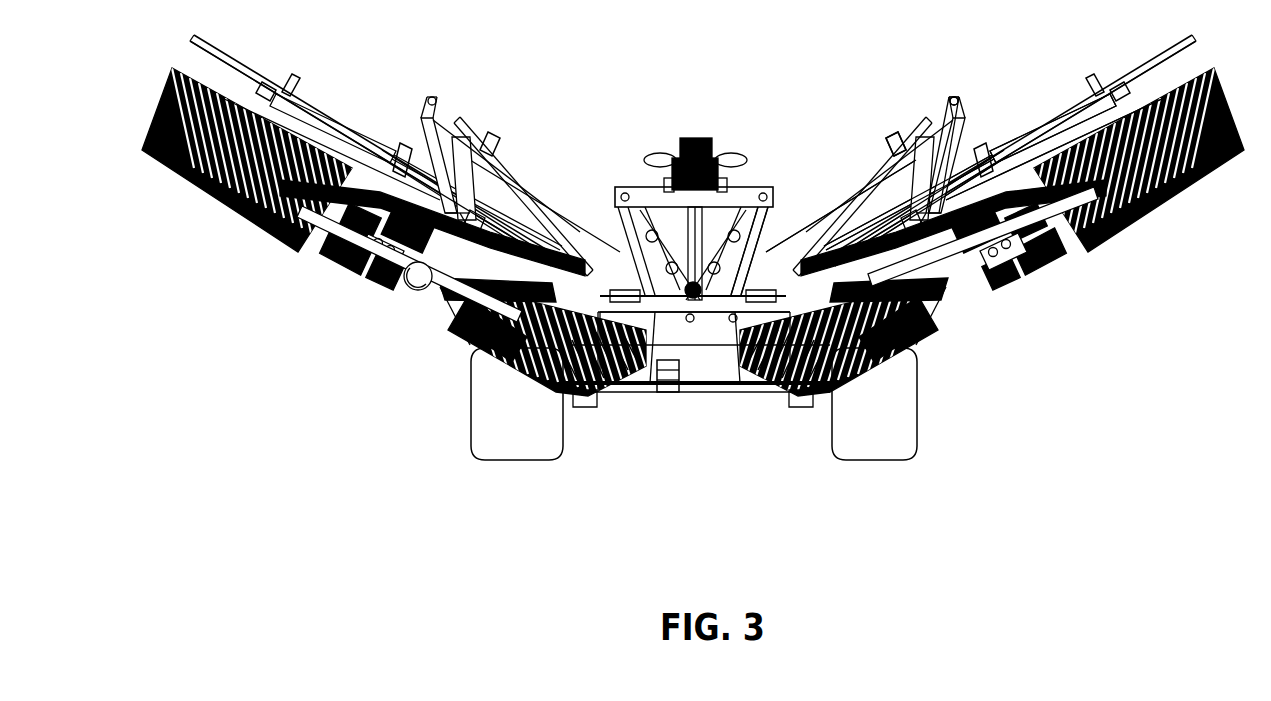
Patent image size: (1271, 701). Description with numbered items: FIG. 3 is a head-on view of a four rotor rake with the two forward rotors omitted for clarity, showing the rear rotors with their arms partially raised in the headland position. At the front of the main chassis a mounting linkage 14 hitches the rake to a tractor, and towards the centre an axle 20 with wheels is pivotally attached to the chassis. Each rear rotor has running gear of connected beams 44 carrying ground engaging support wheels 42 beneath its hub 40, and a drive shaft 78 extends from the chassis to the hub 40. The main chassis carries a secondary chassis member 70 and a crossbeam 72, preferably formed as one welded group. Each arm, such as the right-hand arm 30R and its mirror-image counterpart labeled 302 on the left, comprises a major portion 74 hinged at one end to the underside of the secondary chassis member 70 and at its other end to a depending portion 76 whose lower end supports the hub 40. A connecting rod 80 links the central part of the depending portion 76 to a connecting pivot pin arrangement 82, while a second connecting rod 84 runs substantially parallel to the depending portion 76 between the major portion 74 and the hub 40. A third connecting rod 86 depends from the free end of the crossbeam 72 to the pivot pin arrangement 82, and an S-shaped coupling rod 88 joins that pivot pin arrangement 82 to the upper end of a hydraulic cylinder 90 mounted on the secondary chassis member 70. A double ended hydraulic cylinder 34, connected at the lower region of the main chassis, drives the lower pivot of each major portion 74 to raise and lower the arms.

The mounting linkage 14 is at (658, 340).
The axle 20 is at (596, 449).
The arm 30R is at (1016, 188).
The left brush assembly 302 is at (338, 201).
The double ended hydraulic cylinder 34 is at (670, 303).
The hub 40 is at (993, 150).
The support wheels 42 is at (405, 292).
The beams 44 is at (312, 224).
The secondary chassis member 70 is at (668, 225).
The crossbeam 72 is at (648, 215).
The major portion 74 is at (842, 240).
The depending portion 76 is at (957, 103).
The drive shaft 78 is at (957, 327).
The connecting rod 80 is at (868, 200).
The connecting pivot pin arrangement 82 is at (730, 323).
The second connecting rod 84 is at (967, 110).
The third connecting rod 86 is at (800, 245).
The coupling rod 88 is at (620, 232).
The hydraulic cylinder 90 is at (687, 323).